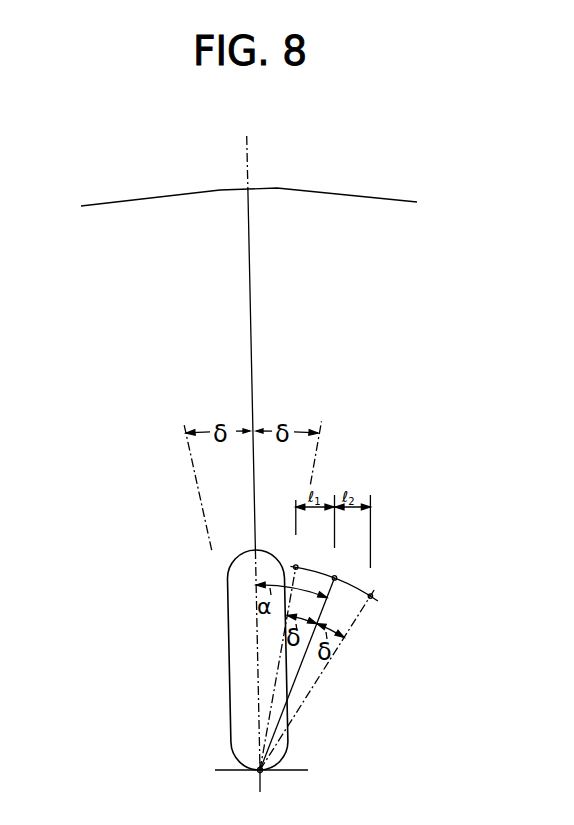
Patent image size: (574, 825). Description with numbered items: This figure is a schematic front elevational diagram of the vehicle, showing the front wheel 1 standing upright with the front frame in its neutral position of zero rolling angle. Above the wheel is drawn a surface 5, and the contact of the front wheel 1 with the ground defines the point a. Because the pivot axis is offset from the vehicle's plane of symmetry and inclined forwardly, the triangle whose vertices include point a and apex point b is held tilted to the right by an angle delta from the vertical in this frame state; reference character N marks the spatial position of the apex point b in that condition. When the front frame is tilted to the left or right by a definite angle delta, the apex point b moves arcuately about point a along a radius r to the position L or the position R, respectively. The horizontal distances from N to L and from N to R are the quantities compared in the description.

The front wheel 1 is at (230, 663).
The road surface 5 is at (363, 196).
The point a is at (262, 772).
The apex point b is at (336, 577).
The position L is at (296, 565).
The position N is at (334, 578).
The position R is at (370, 596).
The radius from contact point r is at (297, 674).